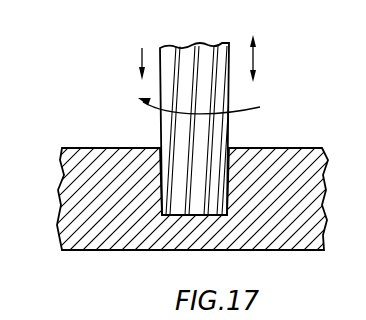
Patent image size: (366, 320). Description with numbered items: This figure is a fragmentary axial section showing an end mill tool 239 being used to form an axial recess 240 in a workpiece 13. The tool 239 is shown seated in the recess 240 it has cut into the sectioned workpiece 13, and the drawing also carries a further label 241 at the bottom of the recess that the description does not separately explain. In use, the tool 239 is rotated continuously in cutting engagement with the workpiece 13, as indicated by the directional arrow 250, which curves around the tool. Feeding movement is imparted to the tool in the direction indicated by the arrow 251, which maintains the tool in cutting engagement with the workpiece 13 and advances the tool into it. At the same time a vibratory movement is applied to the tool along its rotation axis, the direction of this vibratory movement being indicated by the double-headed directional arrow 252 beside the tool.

The workpiece 13 is at (76, 204).
The tool 239 is at (151, 137).
The axial recess 240 is at (215, 119).
The bore bottom 241 is at (205, 216).
The directional arrow 250 is at (217, 110).
The arrow 251 is at (140, 60).
The directional arrow 252 is at (256, 60).